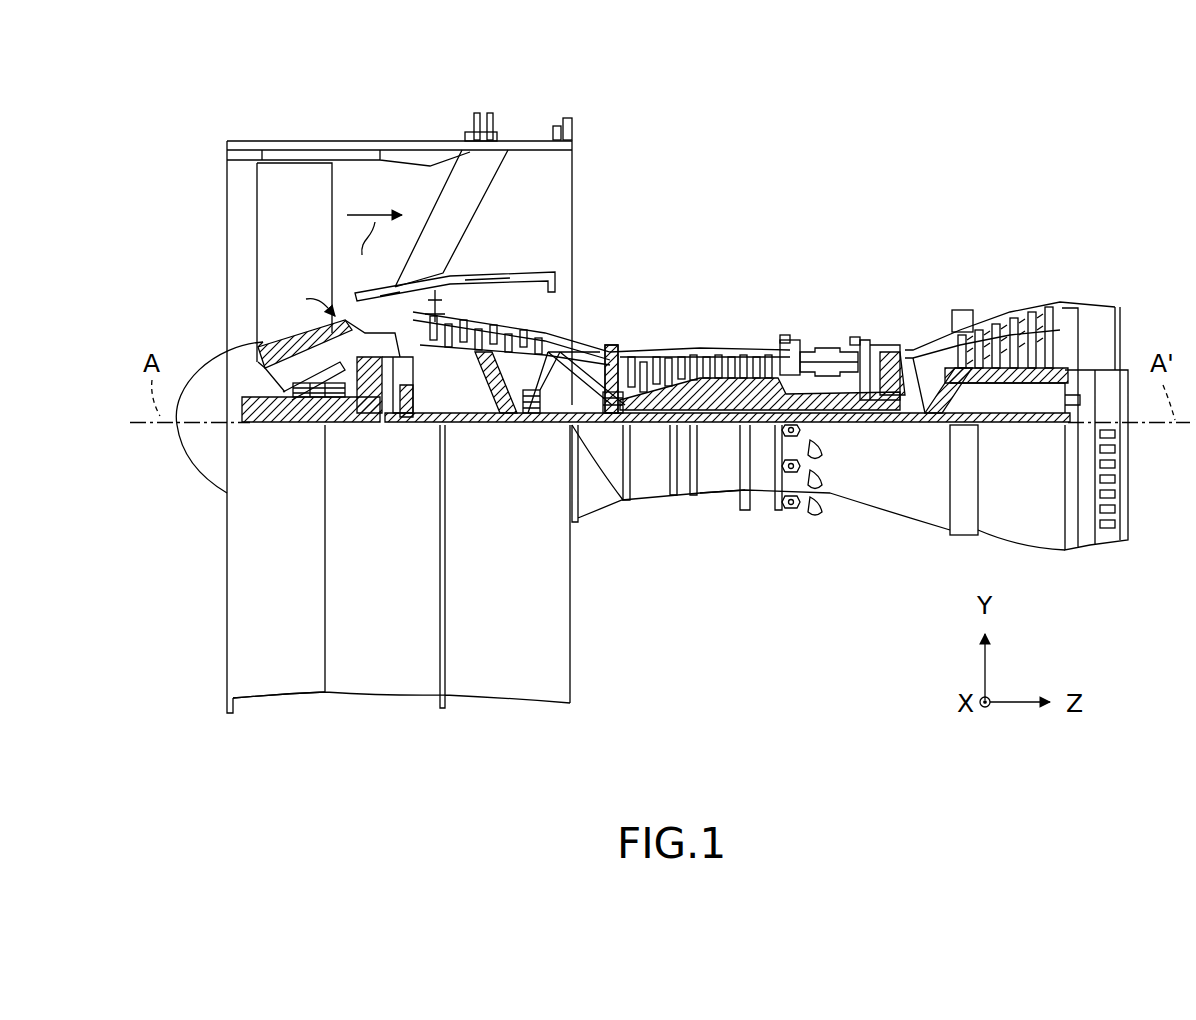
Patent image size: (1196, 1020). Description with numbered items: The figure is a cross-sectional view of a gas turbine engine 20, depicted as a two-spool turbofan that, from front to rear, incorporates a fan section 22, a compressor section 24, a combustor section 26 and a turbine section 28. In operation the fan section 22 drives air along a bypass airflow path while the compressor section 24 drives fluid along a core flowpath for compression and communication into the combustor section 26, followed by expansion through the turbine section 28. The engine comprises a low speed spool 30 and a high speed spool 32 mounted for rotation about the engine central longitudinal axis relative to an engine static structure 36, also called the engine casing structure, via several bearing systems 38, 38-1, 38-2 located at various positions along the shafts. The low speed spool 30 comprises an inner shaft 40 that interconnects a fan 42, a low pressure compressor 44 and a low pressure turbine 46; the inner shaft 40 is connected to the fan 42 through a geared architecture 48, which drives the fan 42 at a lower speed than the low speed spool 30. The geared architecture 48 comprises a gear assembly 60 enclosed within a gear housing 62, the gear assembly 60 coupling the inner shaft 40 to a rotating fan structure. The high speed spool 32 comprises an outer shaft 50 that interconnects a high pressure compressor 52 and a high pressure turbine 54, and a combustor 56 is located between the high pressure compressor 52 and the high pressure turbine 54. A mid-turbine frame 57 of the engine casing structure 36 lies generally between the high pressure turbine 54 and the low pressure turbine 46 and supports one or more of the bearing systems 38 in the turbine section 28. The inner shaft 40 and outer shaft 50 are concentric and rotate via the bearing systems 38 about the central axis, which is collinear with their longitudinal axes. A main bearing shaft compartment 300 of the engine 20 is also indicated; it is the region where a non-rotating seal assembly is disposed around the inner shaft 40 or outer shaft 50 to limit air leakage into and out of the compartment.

The gas turbine engine 20 is at (876, 142).
The fan section 22 is at (422, 126).
The compressor section 24 is at (601, 280).
The combustor section 26 is at (820, 374).
The turbine section 28 is at (1001, 378).
The low speed spool 30 is at (724, 435).
The high speed spool 32 is at (767, 383).
The engine static structure 36 is at (757, 492).
The bearing system 38 is at (933, 390).
The bearing system 38-1 is at (300, 400).
The bearing system 38-2 is at (532, 425).
The inner shaft 40 is at (603, 470).
The fan 42 is at (298, 268).
The low pressure compressor 44 is at (601, 319).
The low pressure turbine 46 is at (1012, 320).
The geared architecture 48 is at (401, 455).
The outer shaft 50 is at (830, 405).
The high pressure compressor 52 is at (733, 388).
The high pressure turbine 54 is at (887, 347).
The combustor 56 is at (817, 362).
The mid-turbine frame 57 is at (930, 343).
The gear assembly 60 is at (415, 393).
The gear housing 62 is at (415, 376).
The main bearing shaft compartment 300 is at (490, 422).